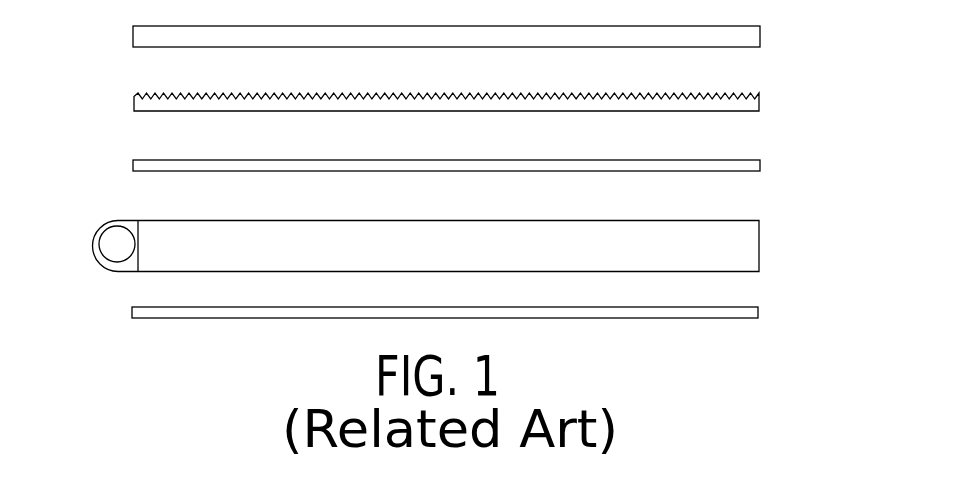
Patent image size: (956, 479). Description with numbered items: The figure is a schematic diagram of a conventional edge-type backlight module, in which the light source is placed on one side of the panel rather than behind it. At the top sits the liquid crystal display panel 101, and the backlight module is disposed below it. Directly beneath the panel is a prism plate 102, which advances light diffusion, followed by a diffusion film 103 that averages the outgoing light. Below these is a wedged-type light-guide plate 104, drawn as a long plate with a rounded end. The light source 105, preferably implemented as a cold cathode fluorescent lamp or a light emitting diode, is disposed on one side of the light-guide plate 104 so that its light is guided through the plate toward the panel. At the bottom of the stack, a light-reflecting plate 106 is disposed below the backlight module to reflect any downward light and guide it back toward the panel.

The liquid crystal display panel 101 is at (760, 38).
The prism plate 102 is at (759, 103).
The diffusion film 103 is at (760, 165).
The wedged-type light-guide plate 104 is at (759, 250).
The light source 105 is at (110, 243).
The light-reflecting plate 106 is at (758, 313).